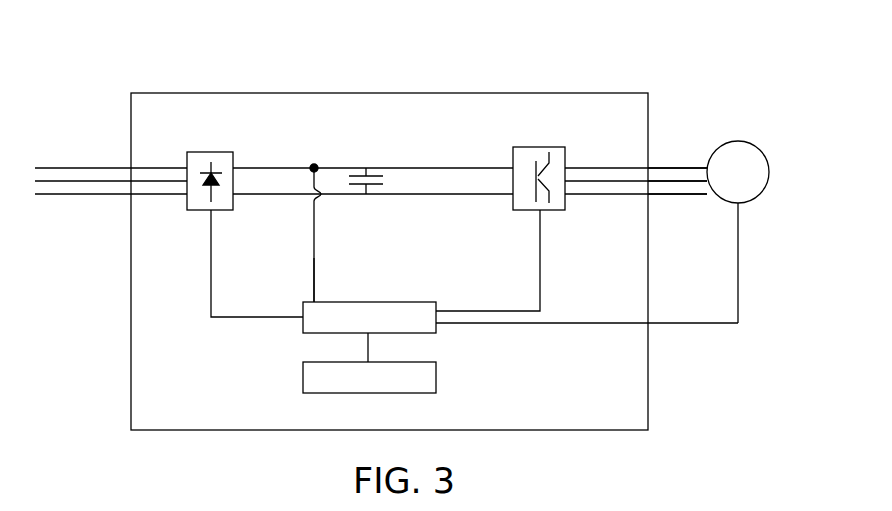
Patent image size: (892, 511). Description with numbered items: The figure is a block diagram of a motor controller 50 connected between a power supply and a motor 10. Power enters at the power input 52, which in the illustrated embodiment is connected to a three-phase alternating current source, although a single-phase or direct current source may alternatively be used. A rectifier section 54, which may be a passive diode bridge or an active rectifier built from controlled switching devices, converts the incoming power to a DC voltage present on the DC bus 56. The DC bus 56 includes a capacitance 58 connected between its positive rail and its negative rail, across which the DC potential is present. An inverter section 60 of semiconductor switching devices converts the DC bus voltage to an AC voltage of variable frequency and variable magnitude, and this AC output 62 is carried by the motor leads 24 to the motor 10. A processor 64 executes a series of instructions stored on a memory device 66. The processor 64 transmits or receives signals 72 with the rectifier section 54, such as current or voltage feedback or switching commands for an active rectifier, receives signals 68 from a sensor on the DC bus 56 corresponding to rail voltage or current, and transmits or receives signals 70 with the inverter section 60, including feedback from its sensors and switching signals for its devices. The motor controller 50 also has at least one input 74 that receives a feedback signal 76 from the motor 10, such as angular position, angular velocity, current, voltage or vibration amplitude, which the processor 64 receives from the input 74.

The motor 10 is at (748, 142).
The motor leads 24 is at (672, 158).
The motor controller 50 is at (483, 92).
The power input 52 is at (122, 164).
The rectifier section 54 is at (215, 152).
The DC bus 56 is at (284, 163).
The capacitance 58 is at (390, 178).
The inverter section 60 is at (530, 147).
The inverter output lines 62 is at (640, 164).
The processor 64 is at (303, 325).
The memory device 66 is at (303, 385).
The signals 68 is at (314, 258).
The signals 70 is at (540, 255).
The signals 72 is at (211, 259).
The input 74 is at (652, 336).
The feedback signal 76 is at (738, 260).